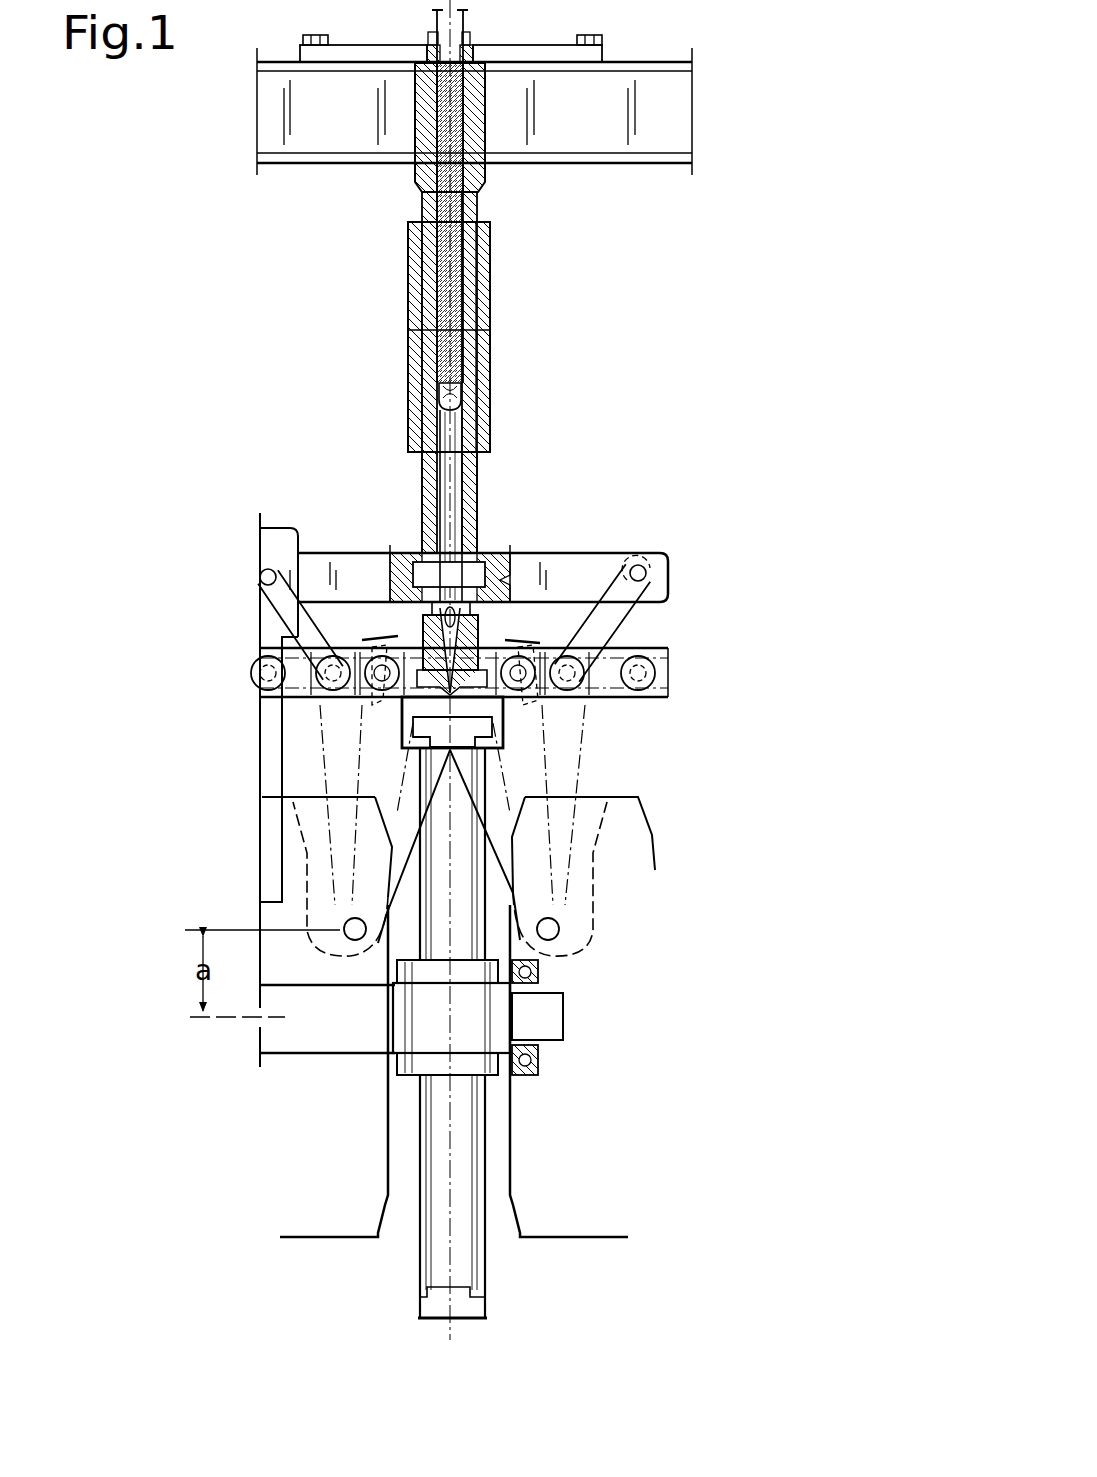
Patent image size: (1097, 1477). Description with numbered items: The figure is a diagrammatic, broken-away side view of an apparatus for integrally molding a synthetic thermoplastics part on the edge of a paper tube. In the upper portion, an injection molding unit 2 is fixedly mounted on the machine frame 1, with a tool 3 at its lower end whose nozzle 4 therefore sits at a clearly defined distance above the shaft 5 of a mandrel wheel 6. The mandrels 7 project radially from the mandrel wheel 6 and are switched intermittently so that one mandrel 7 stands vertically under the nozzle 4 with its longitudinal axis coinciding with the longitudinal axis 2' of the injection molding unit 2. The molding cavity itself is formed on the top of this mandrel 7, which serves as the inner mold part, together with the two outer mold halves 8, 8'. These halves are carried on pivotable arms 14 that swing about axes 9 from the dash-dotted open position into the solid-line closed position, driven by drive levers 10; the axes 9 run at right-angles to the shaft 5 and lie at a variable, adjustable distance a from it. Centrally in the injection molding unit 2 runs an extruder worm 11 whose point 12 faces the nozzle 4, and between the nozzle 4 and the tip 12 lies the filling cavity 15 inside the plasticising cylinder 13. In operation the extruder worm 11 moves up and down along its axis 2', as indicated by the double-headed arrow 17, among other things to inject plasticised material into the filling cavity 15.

The machine frame 1 is at (655, 107).
The injection molding unit 2 is at (513, 196).
The longitudinal axis of the injection molding unit 2' is at (551, 506).
The tool 3 is at (365, 636).
The nozzle 4 is at (437, 637).
The shaft 5 is at (482, 1018).
The mandrel wheel 6 is at (490, 1128).
The mandrel 7 is at (463, 895).
The outer mold part 8 is at (334, 755).
The outer mold part 8' is at (631, 726).
The pivot axis 9 is at (355, 929).
The drive lever 10 is at (300, 655).
The extruder worm 11 is at (443, 291).
The point of the extruder worm 12 is at (455, 410).
The plasticising cylinder 13 is at (418, 243).
The pivotable arm 14 is at (533, 773).
The filling cavity 15 is at (465, 517).
The double-headed arrow 17 is at (516, 242).